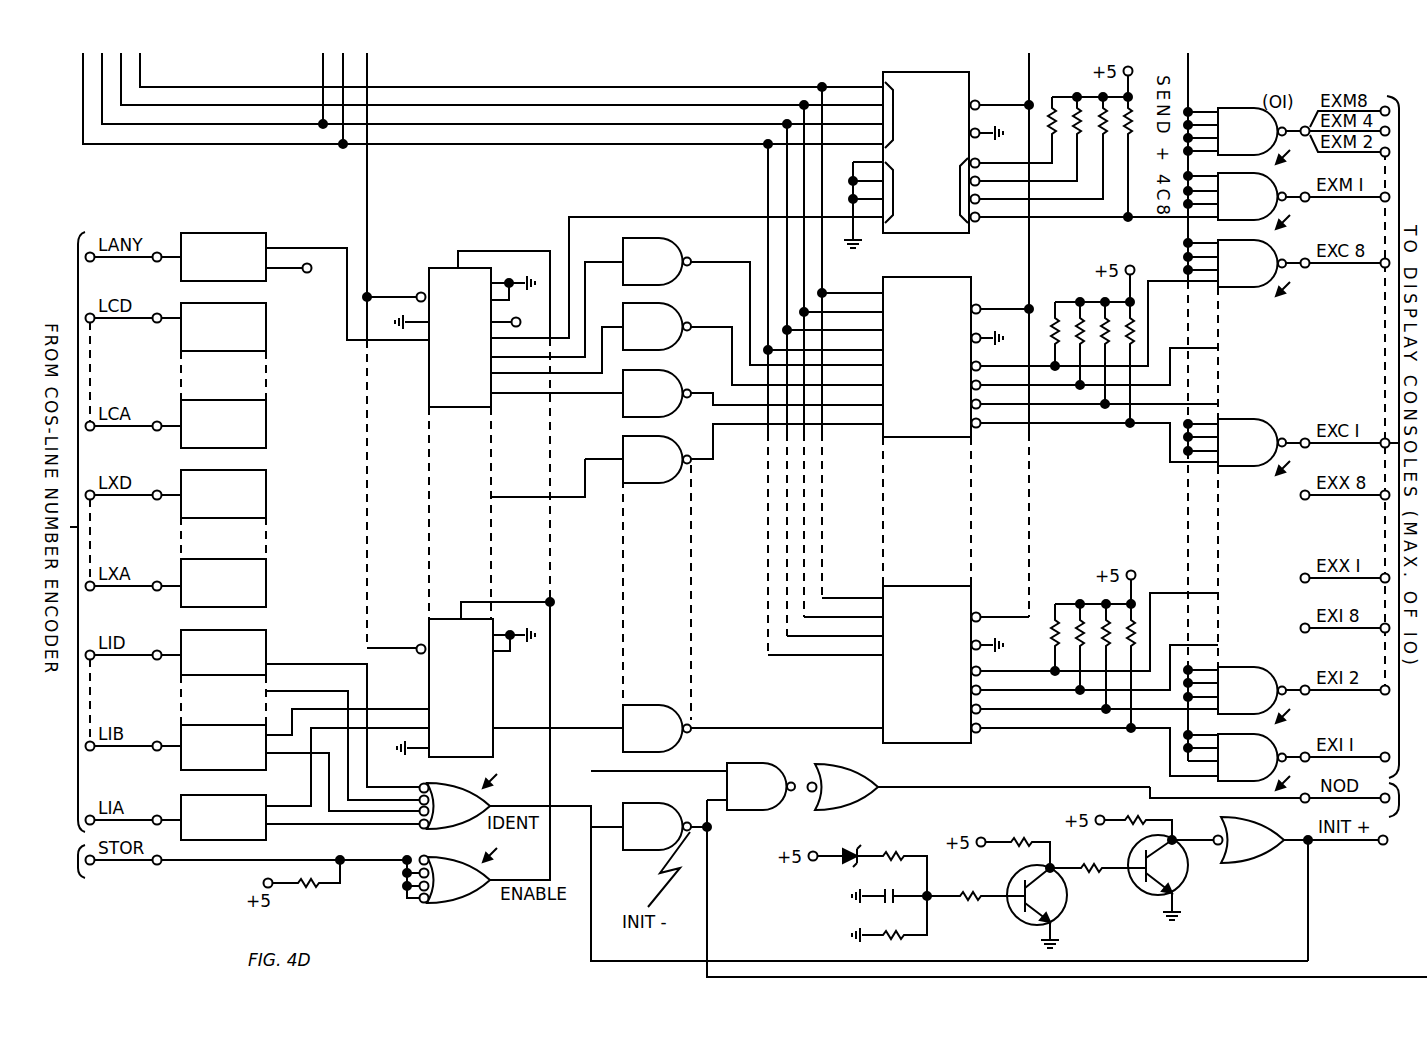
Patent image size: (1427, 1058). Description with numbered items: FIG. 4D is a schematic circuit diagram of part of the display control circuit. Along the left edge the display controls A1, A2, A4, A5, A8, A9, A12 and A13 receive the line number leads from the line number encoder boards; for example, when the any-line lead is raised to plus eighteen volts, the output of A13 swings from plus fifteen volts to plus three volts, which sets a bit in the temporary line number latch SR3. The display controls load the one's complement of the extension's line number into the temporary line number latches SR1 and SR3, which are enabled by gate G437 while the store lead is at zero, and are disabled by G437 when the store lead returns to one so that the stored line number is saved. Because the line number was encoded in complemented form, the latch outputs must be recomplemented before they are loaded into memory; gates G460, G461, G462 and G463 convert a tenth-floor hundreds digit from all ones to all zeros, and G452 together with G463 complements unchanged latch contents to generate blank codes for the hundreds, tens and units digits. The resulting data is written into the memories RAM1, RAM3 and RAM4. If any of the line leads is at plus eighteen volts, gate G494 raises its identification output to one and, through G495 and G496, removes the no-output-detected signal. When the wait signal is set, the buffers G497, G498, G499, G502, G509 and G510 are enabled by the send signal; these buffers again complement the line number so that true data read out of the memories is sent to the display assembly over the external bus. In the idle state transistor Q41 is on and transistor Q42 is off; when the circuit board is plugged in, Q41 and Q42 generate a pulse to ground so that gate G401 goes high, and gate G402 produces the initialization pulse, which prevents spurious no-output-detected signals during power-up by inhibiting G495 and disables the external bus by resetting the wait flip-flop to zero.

The display control A13 is at (223, 257).
The display control A12 is at (223, 327).
The display control A9 is at (223, 424).
The display control A8 is at (223, 494).
The display control A5 is at (223, 583).
The display control A4 is at (223, 652).
The display control A2 is at (223, 747).
The display control A1 is at (223, 817).
The temporary line number latch SR3 is at (460, 337).
The temporary line number latch SR1 is at (461, 688).
The recomplementing gate G463 is at (657, 261).
The recomplementing gate G462 is at (657, 326).
The recomplementing gate G461 is at (657, 393).
The recomplementing gate G460 is at (657, 459).
The complementing gate G452 is at (657, 728).
The memory RAM4 is at (926, 152).
The memory RAM3 is at (927, 357).
The memory RAM1 is at (927, 664).
The buffer G497 is at (1252, 131).
The buffer G498 is at (1252, 196).
The buffer G499 is at (1252, 263).
The buffer G502 is at (1252, 442).
The buffer G509 is at (1252, 690).
The buffer G510 is at (1252, 757).
The identification gate G494 is at (455, 806).
The enable gate G437 is at (455, 880).
The initialization gate G402 is at (657, 826).
The NOD gate G495 is at (761, 786).
The NOD gate G496 is at (843, 787).
The reset gate G401 is at (1249, 840).
The transistor Q41 is at (1058, 895).
The transistor Q42 is at (1180, 865).